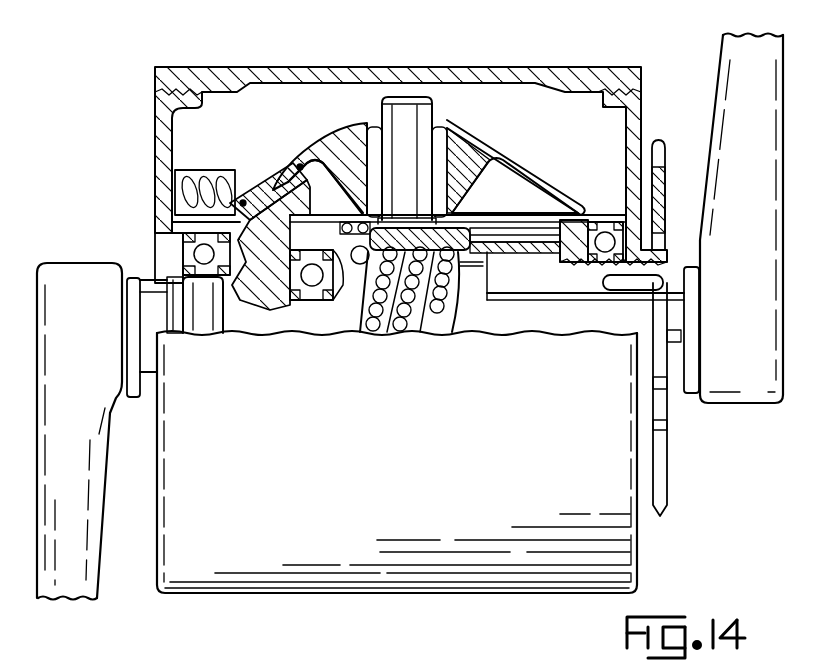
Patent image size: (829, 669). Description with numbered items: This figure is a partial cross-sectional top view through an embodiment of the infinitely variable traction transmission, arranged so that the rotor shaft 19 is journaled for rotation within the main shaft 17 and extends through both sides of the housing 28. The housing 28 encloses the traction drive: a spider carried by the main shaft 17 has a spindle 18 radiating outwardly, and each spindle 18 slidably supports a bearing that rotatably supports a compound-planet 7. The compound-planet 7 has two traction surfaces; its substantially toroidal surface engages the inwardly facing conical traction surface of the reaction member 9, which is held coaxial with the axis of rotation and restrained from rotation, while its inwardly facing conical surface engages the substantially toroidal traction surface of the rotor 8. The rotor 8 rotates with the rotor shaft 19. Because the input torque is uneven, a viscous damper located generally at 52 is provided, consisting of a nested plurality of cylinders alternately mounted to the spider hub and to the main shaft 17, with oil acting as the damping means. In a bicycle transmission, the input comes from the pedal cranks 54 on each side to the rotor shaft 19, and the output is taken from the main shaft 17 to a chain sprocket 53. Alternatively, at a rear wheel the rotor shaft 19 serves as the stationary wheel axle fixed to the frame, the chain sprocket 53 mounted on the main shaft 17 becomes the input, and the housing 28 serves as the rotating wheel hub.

The housing 28 is at (418, 66).
The spindle 18 is at (432, 103).
The compound-planet 7 is at (500, 148).
The rotor 8 is at (288, 172).
The reaction member 9 is at (243, 172).
The viscous damper 52 is at (537, 227).
The main shaft 17 is at (567, 330).
The rotor shaft 19 is at (524, 327).
The chain sprocket 53 is at (665, 414).
The pedal cranks 54 is at (87, 262).